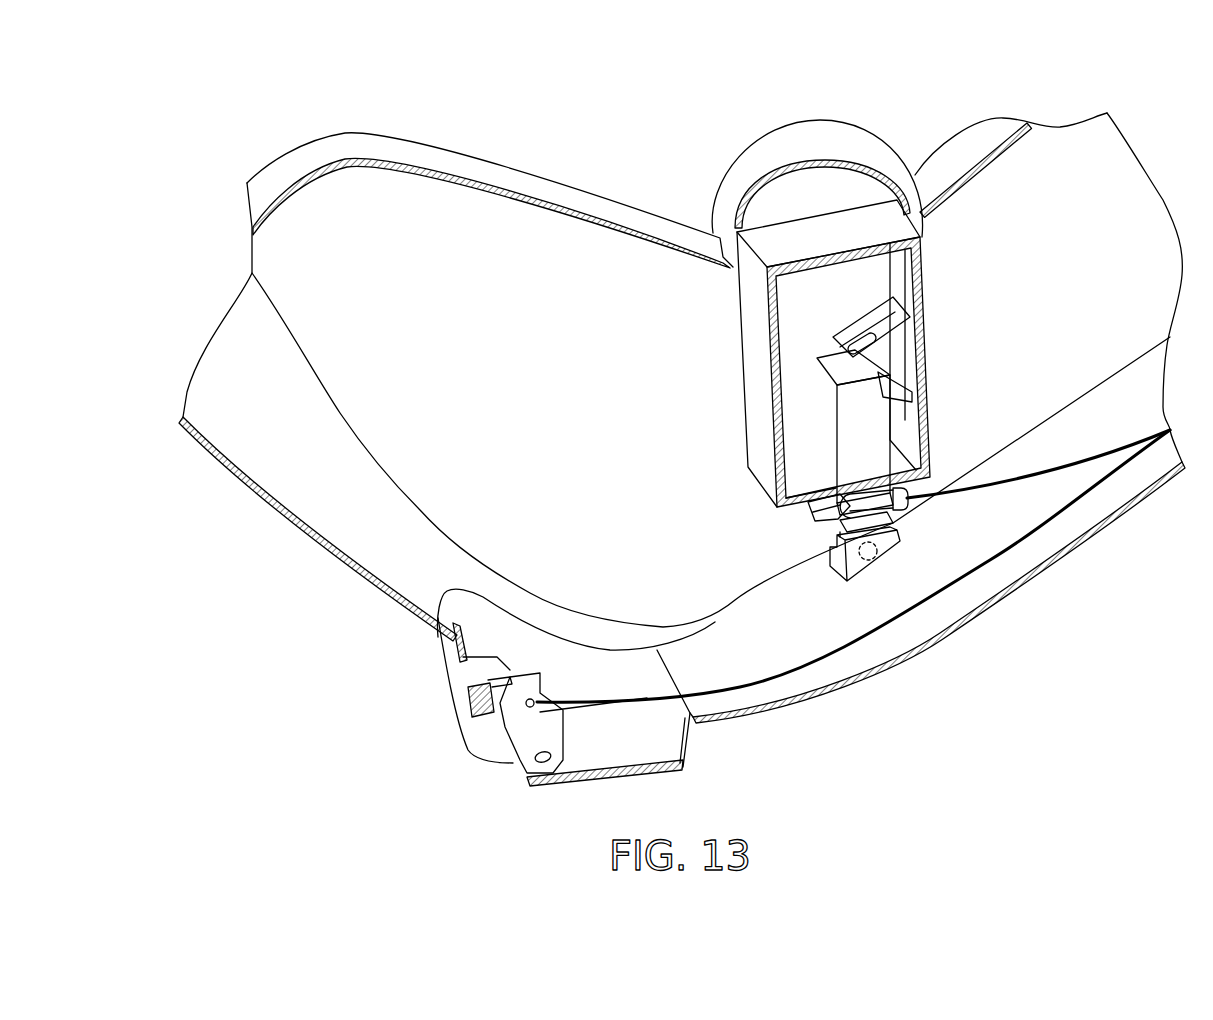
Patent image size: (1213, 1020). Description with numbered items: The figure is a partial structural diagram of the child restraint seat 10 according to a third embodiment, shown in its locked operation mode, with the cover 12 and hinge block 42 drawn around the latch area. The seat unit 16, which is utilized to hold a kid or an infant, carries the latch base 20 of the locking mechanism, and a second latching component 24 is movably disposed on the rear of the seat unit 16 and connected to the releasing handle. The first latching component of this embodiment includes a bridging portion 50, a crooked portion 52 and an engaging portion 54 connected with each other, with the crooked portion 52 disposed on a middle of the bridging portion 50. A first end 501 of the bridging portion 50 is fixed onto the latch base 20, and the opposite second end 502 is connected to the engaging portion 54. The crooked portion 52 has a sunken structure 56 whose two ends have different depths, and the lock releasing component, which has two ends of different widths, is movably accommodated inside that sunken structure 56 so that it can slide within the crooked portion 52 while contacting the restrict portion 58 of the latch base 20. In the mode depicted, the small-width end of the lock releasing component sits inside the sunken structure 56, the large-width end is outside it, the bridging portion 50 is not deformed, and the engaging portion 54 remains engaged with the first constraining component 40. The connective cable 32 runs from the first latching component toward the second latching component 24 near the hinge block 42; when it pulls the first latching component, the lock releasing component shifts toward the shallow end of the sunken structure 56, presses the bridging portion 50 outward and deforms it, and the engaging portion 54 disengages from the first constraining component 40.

The child restraint seat 10 is at (197, 140).
The cover 12 is at (770, 323).
The seat unit 16 is at (527, 183).
The latch base 20 is at (858, 572).
The second latching component 24 is at (533, 737).
The connective cable 32 is at (1057, 445).
The first constraining component 40 is at (867, 325).
The hinge block 42 is at (470, 695).
The bridging portion 50 is at (863, 437).
The crooked portion 52 is at (865, 503).
The engaging portion 54 is at (840, 372).
The sunken structure 56 is at (840, 510).
The restrict portion 58 is at (843, 497).
The first end 501 is at (883, 520).
The second end 502 is at (923, 383).